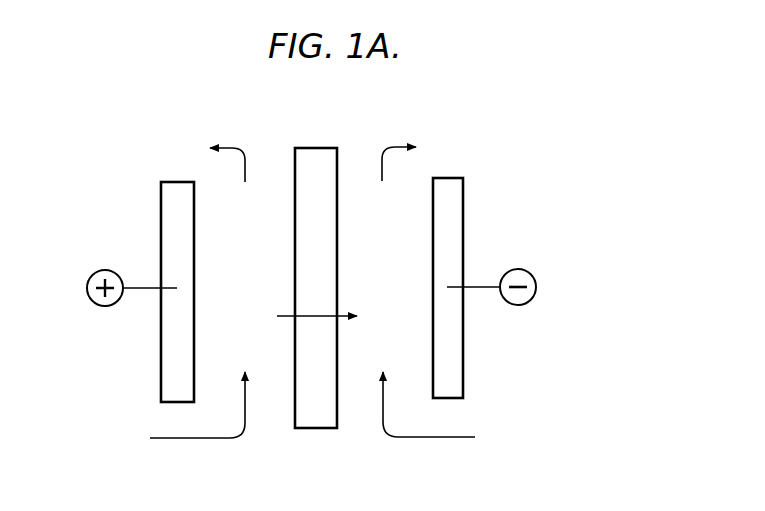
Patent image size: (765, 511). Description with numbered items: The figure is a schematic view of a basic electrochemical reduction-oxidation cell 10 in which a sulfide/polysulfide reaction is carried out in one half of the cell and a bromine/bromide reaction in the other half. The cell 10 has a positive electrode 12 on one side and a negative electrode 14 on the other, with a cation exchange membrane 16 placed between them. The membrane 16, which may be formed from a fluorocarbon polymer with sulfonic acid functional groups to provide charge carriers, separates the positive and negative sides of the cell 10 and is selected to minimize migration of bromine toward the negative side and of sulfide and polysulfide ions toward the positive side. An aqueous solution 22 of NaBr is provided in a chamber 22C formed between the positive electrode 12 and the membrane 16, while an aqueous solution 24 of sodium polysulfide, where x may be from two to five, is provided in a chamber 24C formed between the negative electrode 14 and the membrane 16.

The cell 10 is at (240, 113).
The positive electrode 12 is at (167, 199).
The negative electrode 14 is at (452, 190).
The cation exchange membrane 16 is at (315, 155).
The aqueous solution of NaBr 22 is at (85, 425).
The aqueous solution of Na2Sx 24 is at (525, 410).
The chamber 22C is at (243, 263).
The chamber 24C is at (383, 259).